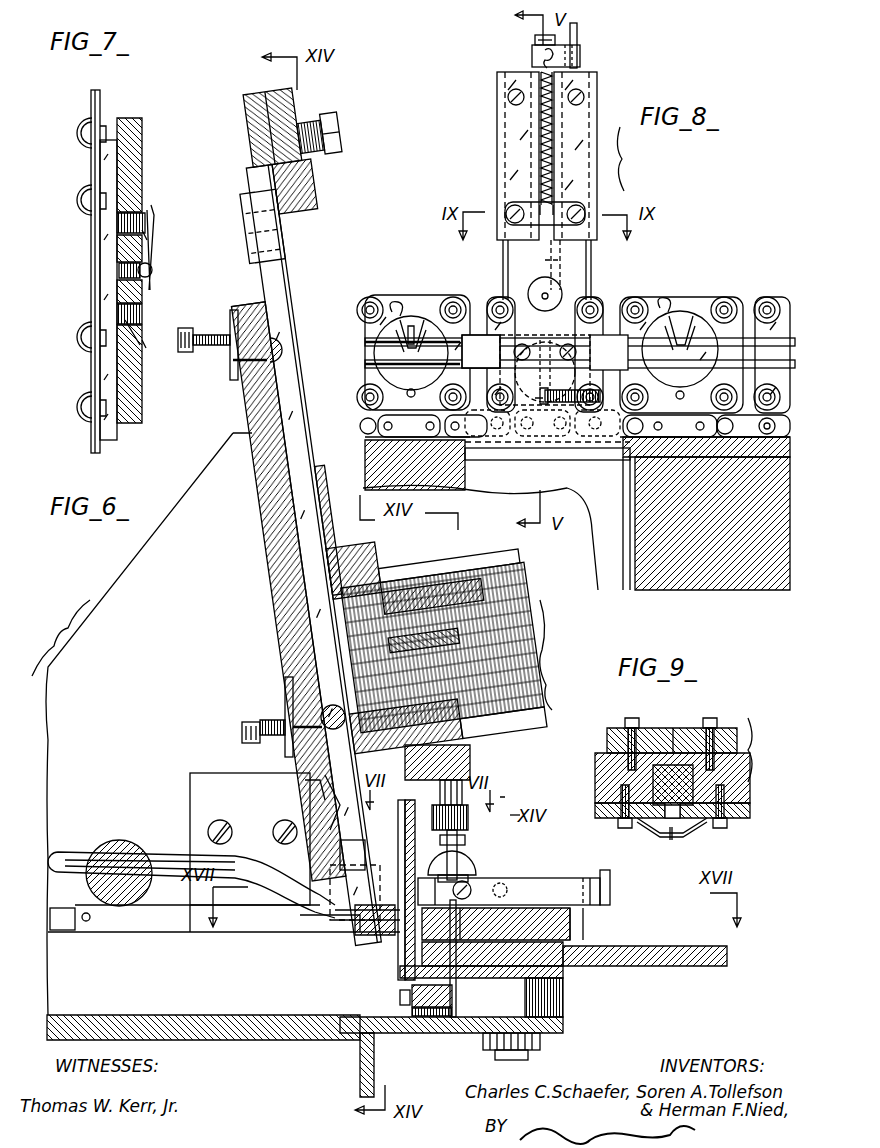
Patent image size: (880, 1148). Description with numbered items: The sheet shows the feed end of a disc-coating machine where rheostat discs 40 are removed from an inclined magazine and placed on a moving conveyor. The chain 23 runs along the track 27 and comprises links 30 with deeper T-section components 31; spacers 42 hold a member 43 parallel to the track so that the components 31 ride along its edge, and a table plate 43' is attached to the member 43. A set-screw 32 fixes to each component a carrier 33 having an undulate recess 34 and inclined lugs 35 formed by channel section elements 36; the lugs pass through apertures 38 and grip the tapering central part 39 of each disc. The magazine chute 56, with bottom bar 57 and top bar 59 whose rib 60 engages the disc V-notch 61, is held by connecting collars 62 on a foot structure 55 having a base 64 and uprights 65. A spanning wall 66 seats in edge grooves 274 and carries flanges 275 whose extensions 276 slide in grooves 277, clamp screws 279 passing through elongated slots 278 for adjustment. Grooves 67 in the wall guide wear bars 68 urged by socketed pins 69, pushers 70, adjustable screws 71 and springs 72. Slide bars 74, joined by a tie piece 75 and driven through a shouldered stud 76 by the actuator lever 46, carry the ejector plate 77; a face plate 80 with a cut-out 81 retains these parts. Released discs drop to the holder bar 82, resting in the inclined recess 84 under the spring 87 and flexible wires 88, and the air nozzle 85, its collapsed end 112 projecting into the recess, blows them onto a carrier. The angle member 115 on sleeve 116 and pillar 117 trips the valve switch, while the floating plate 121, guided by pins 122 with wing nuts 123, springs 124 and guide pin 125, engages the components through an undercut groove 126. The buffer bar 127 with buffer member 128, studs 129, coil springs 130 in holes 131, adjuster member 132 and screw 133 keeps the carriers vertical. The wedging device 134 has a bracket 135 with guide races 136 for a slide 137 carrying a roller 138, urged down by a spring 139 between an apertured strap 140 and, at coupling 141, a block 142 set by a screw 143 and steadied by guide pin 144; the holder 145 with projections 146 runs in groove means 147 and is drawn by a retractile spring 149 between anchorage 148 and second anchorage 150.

In FIG. 6, the chain 23 is at (425, 1017).
In FIG. 8, the track 27 is at (576, 515).
In FIG. 6, the track 27 is at (563, 1028).
In FIG. 6, the links 30 is at (456, 1017).
In FIG. 8, the T-section components 31 is at (372, 433).
In FIG. 6, the T-section components 31 is at (400, 997).
In FIG. 8, the set-screw 32 is at (575, 426).
In FIG. 7, the carrier 33 is at (100, 97).
In FIG. 8, the carrier 33 is at (375, 400).
In FIG. 8, the undulate recess 34 is at (415, 318).
In FIG. 8, the inclined lugs 35 is at (365, 352).
In FIG. 6, the channel section elements 36 is at (405, 940).
In FIG. 8, the apertures 38 is at (411, 356).
In FIG. 8, the tapering central part 39 is at (408, 335).
In FIG. 7, the rheostat discs 40 is at (91, 101).
In FIG. 8, the rheostat discs 40 is at (390, 322).
In FIG. 6, the rheostat discs 40 is at (332, 882).
In FIG. 6, the spacers 42 is at (563, 1010).
In FIG. 6, the member 43 is at (503, 968).
In FIG. 6, the table plate 43' is at (645, 937).
In FIG. 6, the actuator lever 46 is at (312, 194).
In FIG. 8, the foot structure 55 is at (664, 458).
In FIG. 6, the foot structure 55 is at (54, 638).
In FIG. 6, the inclined chute 56 is at (462, 647).
In FIG. 6, the bottom bar 57 is at (540, 713).
In FIG. 6, the top bar 59 is at (484, 572).
In FIG. 6, the rib 60 is at (412, 598).
In FIG. 8, the V-notch 61 is at (390, 310).
In FIG. 6, the connecting collars 62 is at (365, 556).
In FIG. 6, the base 64 is at (210, 1016).
In FIG. 6, the uprights 65 is at (149, 724).
In FIG. 6, the spanning wall 66 is at (275, 550).
In FIG. 6, the grooves 67 is at (300, 508).
In FIG. 6, the wear bars 68 is at (320, 590).
In FIG. 6, the socketed pins 69 is at (245, 365).
In FIG. 6, the pushers 70 is at (233, 312).
In FIG. 6, the adjustable screws 71 is at (186, 352).
In FIG. 6, the springs 72 is at (210, 346).
In FIG. 6, the slide bars 74 is at (245, 192).
In FIG. 6, the tie piece 75 is at (258, 128).
In FIG. 6, the shouldered stud 76 is at (338, 144).
In FIG. 6, the ejector plate 77 is at (268, 462).
In FIG. 6, the face plate 80 is at (322, 530).
In FIG. 6, the cut-out 81 is at (320, 830).
In FIG. 6, the bar 82 is at (385, 925).
In FIG. 6, the inclined recess 84 is at (310, 920).
In FIG. 6, the air nozzle 85 is at (75, 855).
In FIG. 6, the spring 87 is at (338, 905).
In FIG. 8, the flexible wires 88 is at (365, 341).
In FIG. 6, the flexible wires 88 is at (403, 870).
In FIG. 6, the collapsed end 112 is at (328, 915).
In FIG. 6, the angle member 115 is at (610, 893).
In FIG. 6, the sleeve 116 is at (520, 888).
In FIG. 6, the pillar 117 is at (457, 990).
In FIG. 6, the floating plate 121 is at (572, 920).
In FIG. 6, the spaced pins 122 is at (465, 840).
In FIG. 6, the wing nuts 123 is at (472, 860).
In FIG. 6, the springs 124 is at (468, 878).
In FIG. 6, the guide pin 125 is at (580, 888).
In FIG. 6, the undercut groove 126 is at (452, 995).
In FIG. 7, the bar 127 is at (128, 140).
In FIG. 6, the bar 127 is at (455, 755).
In FIG. 7, the buffer member 128 is at (100, 367).
In FIG. 6, the buffer member 128 is at (340, 852).
In FIG. 7, the studs 129 is at (100, 232).
In FIG. 6, the studs 129 is at (462, 786).
In FIG. 7, the coil springs 130 is at (135, 215).
In FIG. 6, the coil springs 130 is at (462, 822).
In FIG. 7, the holes 131 is at (125, 200).
In FIG. 7, the adjuster member 132 is at (153, 226).
In FIG. 7, the screw 133 is at (147, 265).
In FIG. 9, the wedging device 134 is at (772, 750).
In FIG. 8, the vertical bracket 135 is at (503, 278).
In FIG. 9, the vertical bracket 135 is at (722, 728).
In FIG. 8, the guide races 136 is at (497, 116).
In FIG. 9, the guide races 136 is at (595, 782).
In FIG. 8, the slide 137 is at (560, 264).
In FIG. 9, the slide 137 is at (672, 770).
In FIG. 8, the roller 138 is at (562, 283).
In FIG. 8, the spring 139 is at (541, 161).
In FIG. 9, the spring 139 is at (672, 836).
In FIG. 8, the apertured strap 140 is at (522, 228).
In FIG. 9, the apertured strap 140 is at (650, 832).
In FIG. 8, the coupling 141 is at (532, 56).
In FIG. 8, the block 142 is at (580, 57).
In FIG. 8, the screw 143 is at (535, 37).
In FIG. 8, the guide pin 144 is at (577, 30).
In FIG. 8, the holder 145 is at (545, 370).
In FIG. 8, the projections 146 is at (481, 351).
In FIG. 8, the groove means 147 is at (495, 430).
In FIG. 8, the anchorage 148 is at (540, 430).
In FIG. 8, the retractile spring 149 is at (563, 404).
In FIG. 8, the second anchorage 150 is at (680, 355).
In FIG. 6, the edge grooves 274 is at (298, 779).
In FIG. 6, the flanges 275 is at (200, 783).
In FIG. 6, the extensions 276 is at (160, 920).
In FIG. 6, the grooves 277 is at (62, 922).
In FIG. 6, the elongated slots 278 is at (232, 826).
In FIG. 6, the clamp screws 279 is at (222, 836).